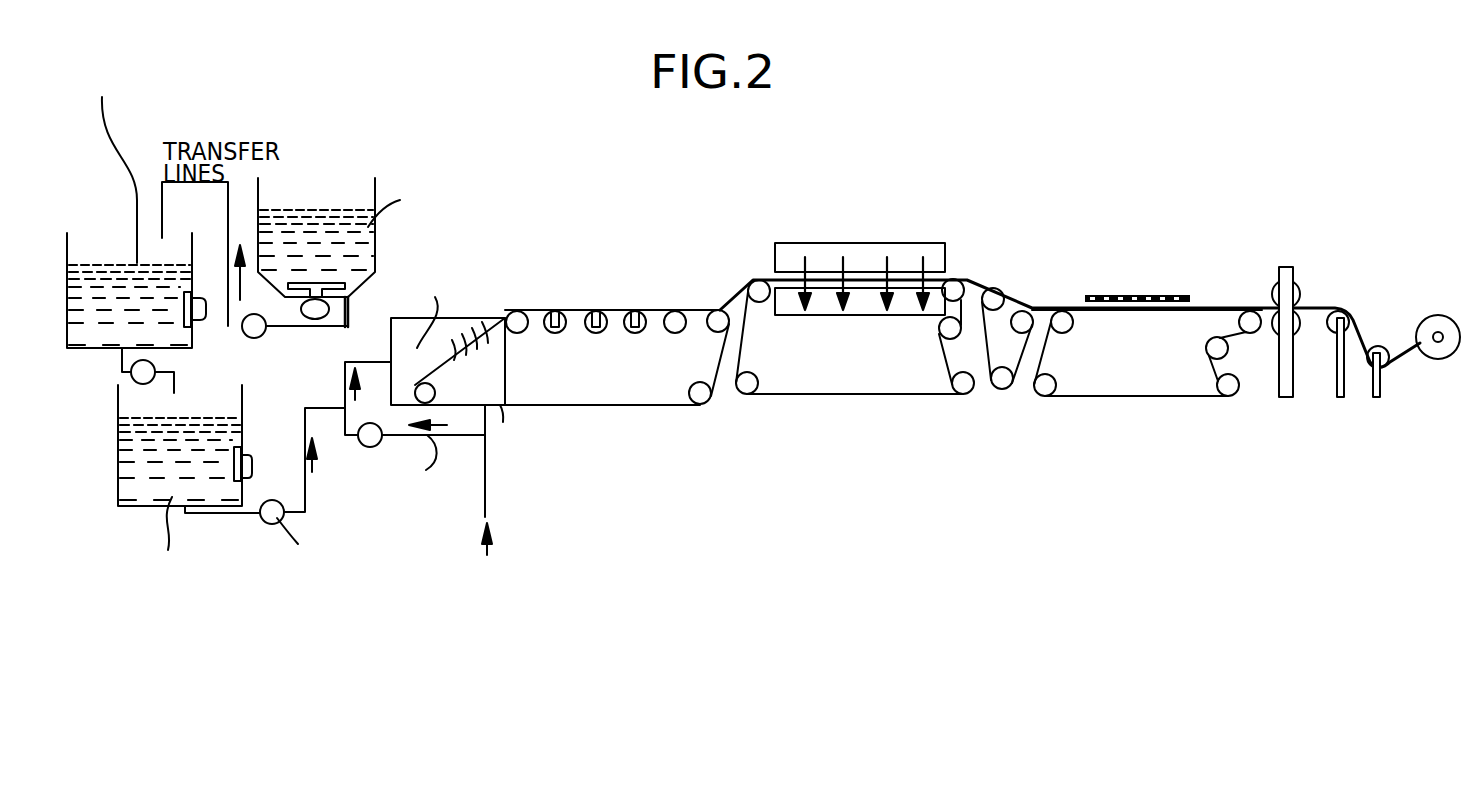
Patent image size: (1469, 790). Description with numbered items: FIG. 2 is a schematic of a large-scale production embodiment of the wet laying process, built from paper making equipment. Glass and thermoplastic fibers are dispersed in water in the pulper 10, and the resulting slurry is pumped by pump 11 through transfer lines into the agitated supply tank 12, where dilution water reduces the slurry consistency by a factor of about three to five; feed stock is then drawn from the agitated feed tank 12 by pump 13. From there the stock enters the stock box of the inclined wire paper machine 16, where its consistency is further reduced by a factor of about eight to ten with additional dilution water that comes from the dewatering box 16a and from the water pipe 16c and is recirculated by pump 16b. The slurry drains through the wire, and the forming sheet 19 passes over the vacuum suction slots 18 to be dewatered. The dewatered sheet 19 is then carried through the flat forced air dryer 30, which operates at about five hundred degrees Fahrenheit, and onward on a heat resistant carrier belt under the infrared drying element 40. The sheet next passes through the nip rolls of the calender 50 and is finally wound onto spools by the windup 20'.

The pulper 10 is at (377, 180).
The pump 11 is at (258, 338).
The agitated supply tank 12 is at (67, 238).
The pump 13 is at (278, 524).
The inclined wire paper machine 16 is at (474, 295).
The dewatering box 16a is at (490, 405).
The pump 16b is at (370, 423).
The pipe 16c is at (489, 495).
The suction slots 18 is at (560, 326).
The dewatered sheet 19 is at (720, 306).
The flat forced air dryer 30 is at (962, 267).
The infrared drying element 40 is at (1078, 280).
The calender 50 is at (1318, 281).
The windup 20' is at (1393, 349).